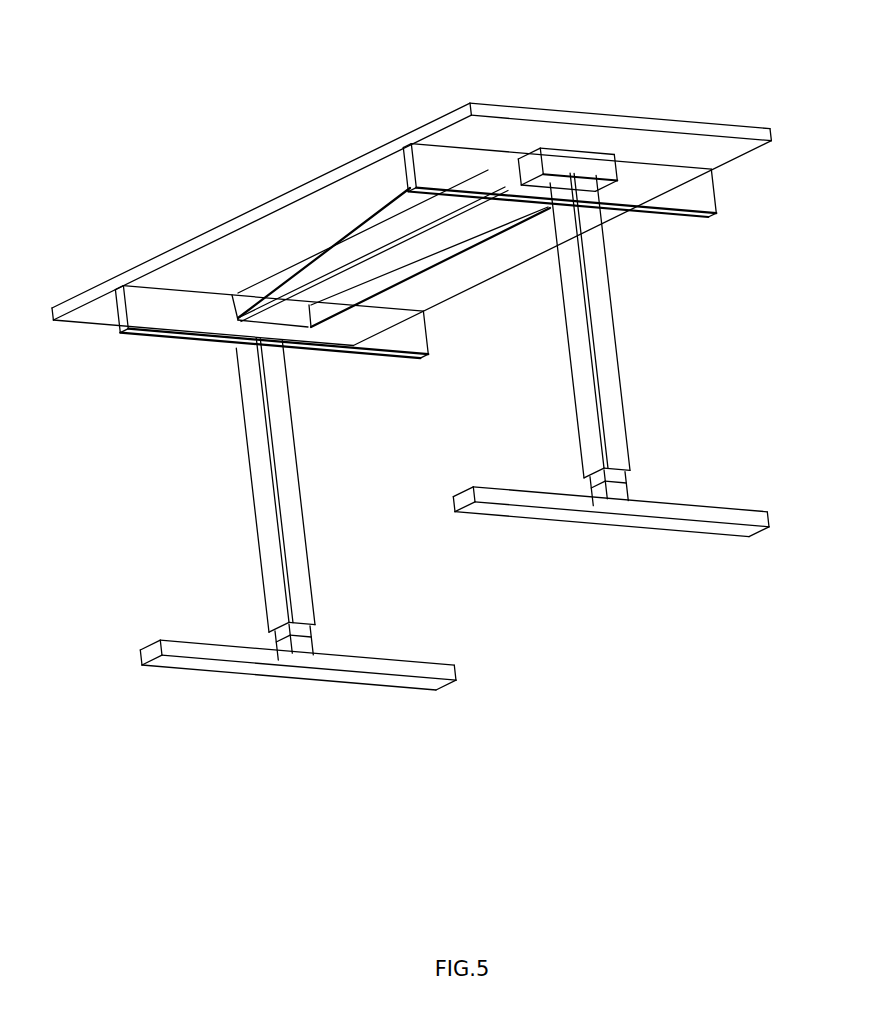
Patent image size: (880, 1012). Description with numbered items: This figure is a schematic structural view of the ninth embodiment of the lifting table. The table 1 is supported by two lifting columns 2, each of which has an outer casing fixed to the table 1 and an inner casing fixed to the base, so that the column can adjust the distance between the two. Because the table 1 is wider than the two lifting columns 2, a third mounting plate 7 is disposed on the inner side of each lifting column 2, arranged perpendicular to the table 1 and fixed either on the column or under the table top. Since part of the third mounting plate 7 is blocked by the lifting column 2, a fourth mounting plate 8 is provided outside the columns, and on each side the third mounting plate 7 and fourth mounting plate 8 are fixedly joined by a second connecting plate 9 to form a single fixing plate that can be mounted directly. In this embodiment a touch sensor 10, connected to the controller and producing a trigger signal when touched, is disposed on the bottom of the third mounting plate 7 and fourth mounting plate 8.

The table 1 is at (411, 173).
The lifting column 2 is at (386, 330).
The third mounting plate 7 is at (415, 179).
The fourth mounting plate 8 is at (652, 253).
The second connecting plate 9 is at (604, 95).
The touch sensor 10 is at (358, 164).